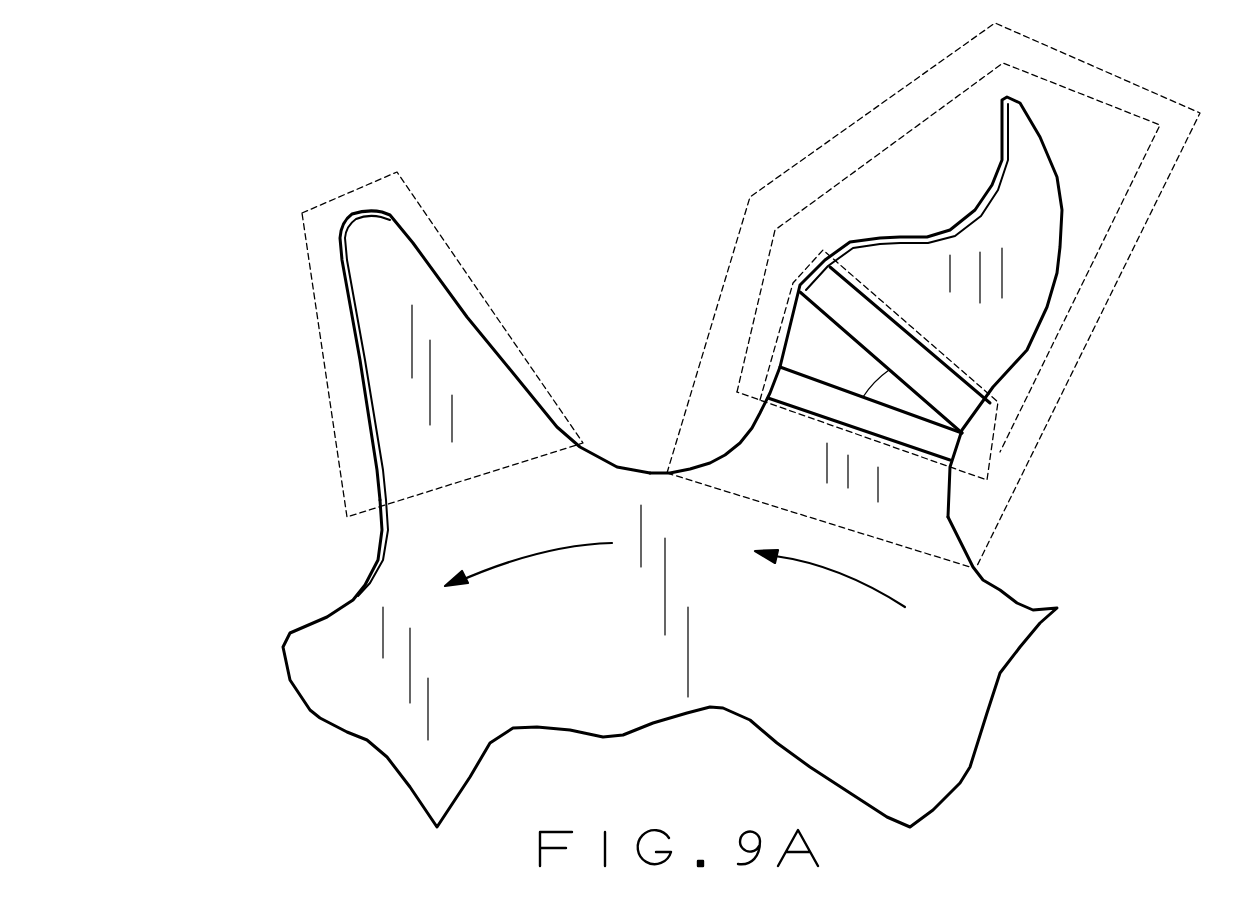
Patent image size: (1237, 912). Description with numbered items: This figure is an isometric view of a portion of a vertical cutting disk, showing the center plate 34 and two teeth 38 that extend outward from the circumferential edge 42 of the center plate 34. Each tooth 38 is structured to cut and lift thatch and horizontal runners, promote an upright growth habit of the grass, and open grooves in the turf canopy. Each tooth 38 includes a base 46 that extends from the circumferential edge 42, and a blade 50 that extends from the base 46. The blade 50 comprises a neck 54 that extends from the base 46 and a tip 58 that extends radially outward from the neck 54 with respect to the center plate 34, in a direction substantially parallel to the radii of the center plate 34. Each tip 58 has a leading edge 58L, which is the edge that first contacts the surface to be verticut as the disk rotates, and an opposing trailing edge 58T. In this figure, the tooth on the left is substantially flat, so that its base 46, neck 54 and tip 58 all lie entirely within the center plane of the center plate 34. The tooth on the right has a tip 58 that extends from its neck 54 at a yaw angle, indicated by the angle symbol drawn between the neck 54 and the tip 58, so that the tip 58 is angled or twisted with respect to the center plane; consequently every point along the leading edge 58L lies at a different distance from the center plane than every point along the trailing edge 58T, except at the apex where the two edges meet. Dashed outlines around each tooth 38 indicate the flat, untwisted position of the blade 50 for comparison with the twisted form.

The center plate 34 is at (500, 657).
The tooth 38 is at (313, 407).
The circumferential edge 42 is at (655, 470).
The base 46 is at (527, 493).
The blade 50 is at (473, 277).
The neck 54 is at (457, 390).
The tip 58 is at (395, 280).
The leading edge 58L is at (357, 362).
The trailing edge 58T is at (488, 343).